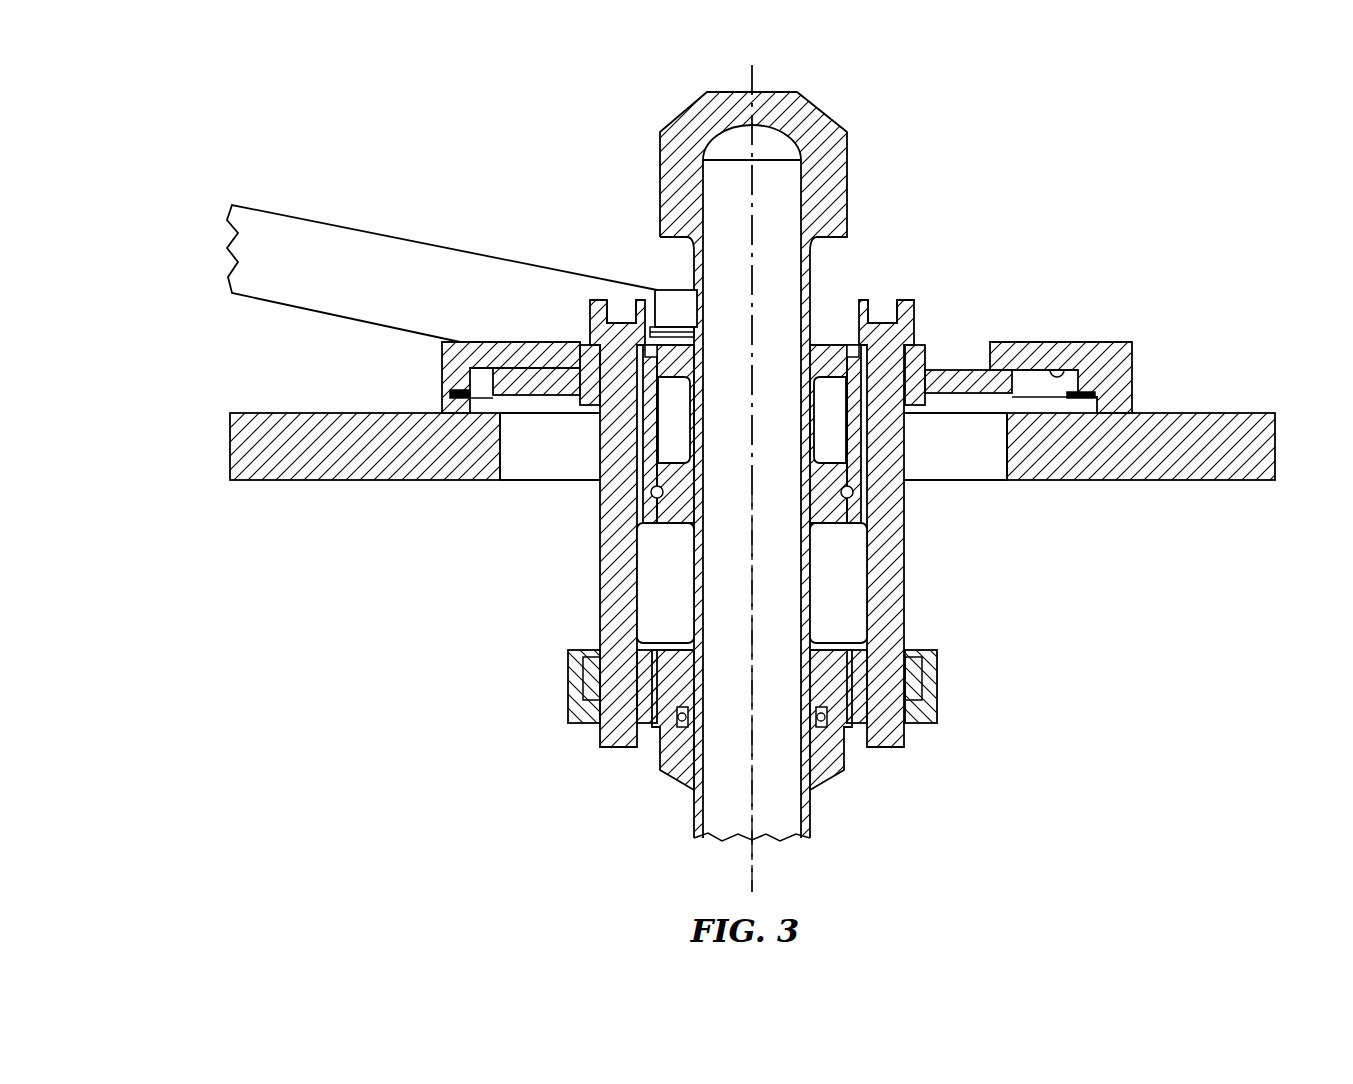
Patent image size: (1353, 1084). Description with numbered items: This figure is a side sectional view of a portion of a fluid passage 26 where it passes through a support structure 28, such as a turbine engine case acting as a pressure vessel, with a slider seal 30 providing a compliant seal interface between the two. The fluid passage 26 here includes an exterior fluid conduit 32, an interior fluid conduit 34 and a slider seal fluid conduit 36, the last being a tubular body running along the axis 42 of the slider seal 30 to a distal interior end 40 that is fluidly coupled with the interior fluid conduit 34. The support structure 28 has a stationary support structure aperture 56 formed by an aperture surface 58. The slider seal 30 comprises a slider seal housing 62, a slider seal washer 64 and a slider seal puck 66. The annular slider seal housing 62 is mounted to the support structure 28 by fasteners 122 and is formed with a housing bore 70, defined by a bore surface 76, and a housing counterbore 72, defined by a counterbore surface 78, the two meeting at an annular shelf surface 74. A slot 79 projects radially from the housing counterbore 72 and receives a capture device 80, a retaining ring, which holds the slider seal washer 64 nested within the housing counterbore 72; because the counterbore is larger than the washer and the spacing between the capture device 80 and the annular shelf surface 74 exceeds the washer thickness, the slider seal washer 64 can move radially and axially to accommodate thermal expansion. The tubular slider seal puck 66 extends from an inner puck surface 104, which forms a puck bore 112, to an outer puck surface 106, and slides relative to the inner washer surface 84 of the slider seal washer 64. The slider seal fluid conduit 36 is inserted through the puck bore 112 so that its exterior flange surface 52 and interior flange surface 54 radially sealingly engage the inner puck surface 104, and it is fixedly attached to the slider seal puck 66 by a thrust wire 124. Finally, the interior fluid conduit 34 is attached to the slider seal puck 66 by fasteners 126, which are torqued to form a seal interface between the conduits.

The fluid passage 26 is at (880, 106).
The support structure 28 is at (225, 465).
The slider seal 30 is at (990, 290).
The exterior fluid conduit 32 is at (400, 232).
The interior fluid conduit 34 is at (943, 705).
The slider seal fluid conduit 36 is at (855, 183).
The distal interior end 40 is at (688, 780).
The axis 42 is at (755, 868).
The exterior flange surface 52 is at (852, 345).
The interior flange surface 54 is at (847, 500).
The support structure aperture 56 is at (533, 458).
The aperture surface 58 is at (500, 440).
The slider seal housing 62 is at (1118, 340).
The slider seal washer 64 is at (1003, 413).
The slider seal puck 66 is at (930, 358).
The housing bore 70 is at (578, 340).
The housing counterbore 72 is at (552, 405).
The annular shelf surface 74 is at (1060, 368).
The bore surface 76 is at (578, 342).
The counterbore surface 78 is at (480, 378).
The slot 79 is at (460, 400).
The capture device 80 is at (1062, 399).
The inner washer surface 84 is at (908, 398).
The inner puck surface 104 is at (800, 357).
The outer puck surface 106 is at (968, 405).
The puck bore 112 is at (917, 345).
The fastener 122 is at (676, 290).
The thrust wire 124 is at (660, 500).
The fastener 126 is at (598, 628).